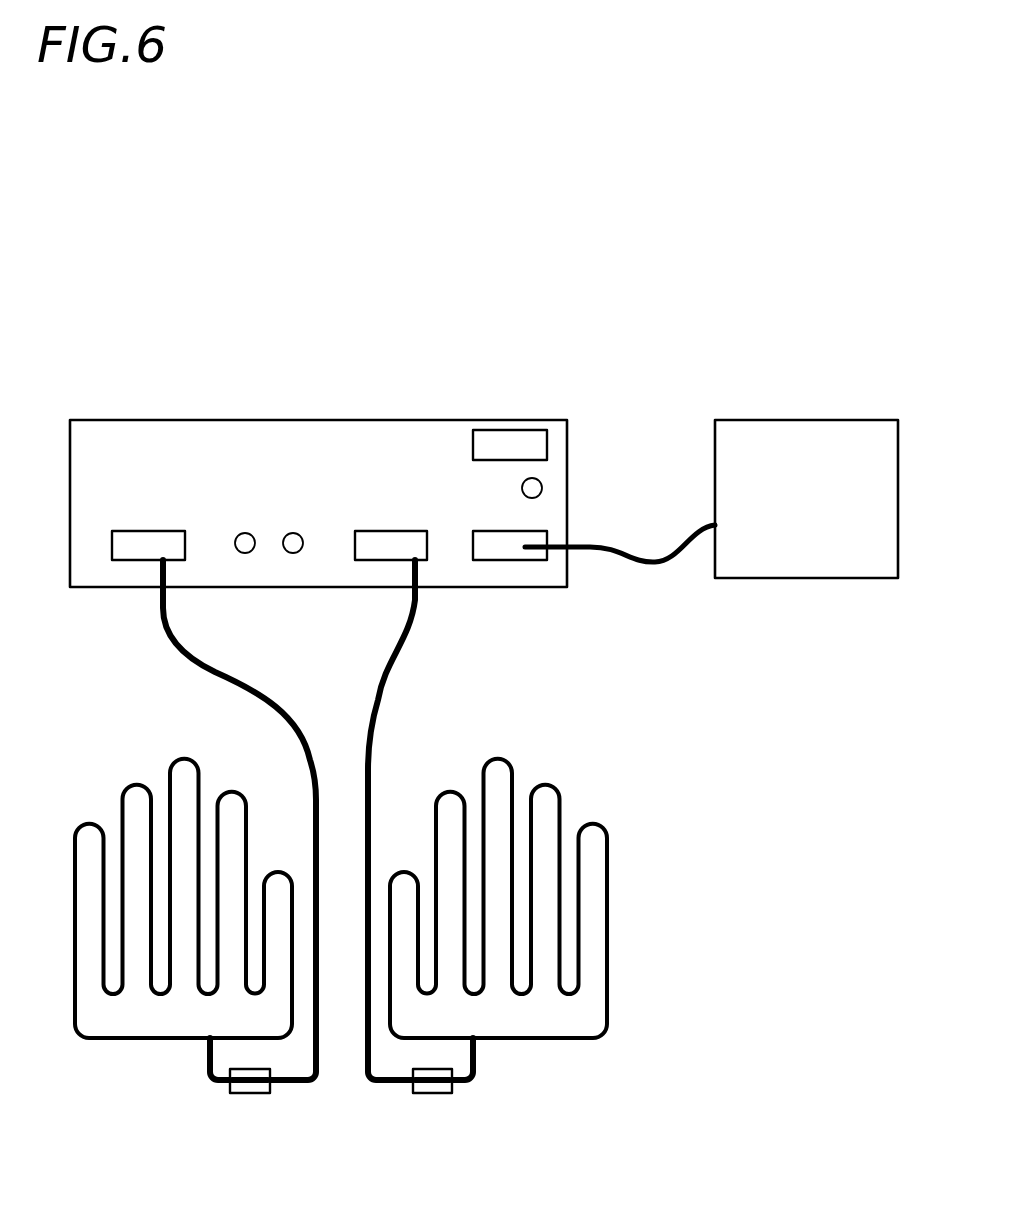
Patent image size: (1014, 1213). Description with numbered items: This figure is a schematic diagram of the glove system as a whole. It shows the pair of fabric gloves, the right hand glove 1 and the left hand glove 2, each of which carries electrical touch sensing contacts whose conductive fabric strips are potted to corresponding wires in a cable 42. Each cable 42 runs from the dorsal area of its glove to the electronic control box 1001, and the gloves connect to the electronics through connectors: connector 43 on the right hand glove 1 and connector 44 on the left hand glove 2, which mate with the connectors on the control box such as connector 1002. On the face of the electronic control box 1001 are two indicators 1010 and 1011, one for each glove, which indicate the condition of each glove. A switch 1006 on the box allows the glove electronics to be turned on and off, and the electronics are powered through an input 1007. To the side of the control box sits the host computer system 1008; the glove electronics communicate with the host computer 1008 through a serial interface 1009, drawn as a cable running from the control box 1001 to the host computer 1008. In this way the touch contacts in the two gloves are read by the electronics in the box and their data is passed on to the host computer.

The right hand glove 1 is at (622, 1008).
The left hand glove 2 is at (63, 872).
The cable 42 is at (477, 1055).
The connector 43 is at (437, 1094).
The connector 44 is at (253, 1094).
The electronic control box 1001 is at (102, 404).
The connector 1002 is at (122, 562).
The switch 1006 is at (512, 431).
The input 1007 is at (542, 495).
The host computer system 1008 is at (767, 405).
The serial interface 1009 is at (673, 567).
The indicator 1010 is at (246, 532).
The indicator 1011 is at (303, 543).